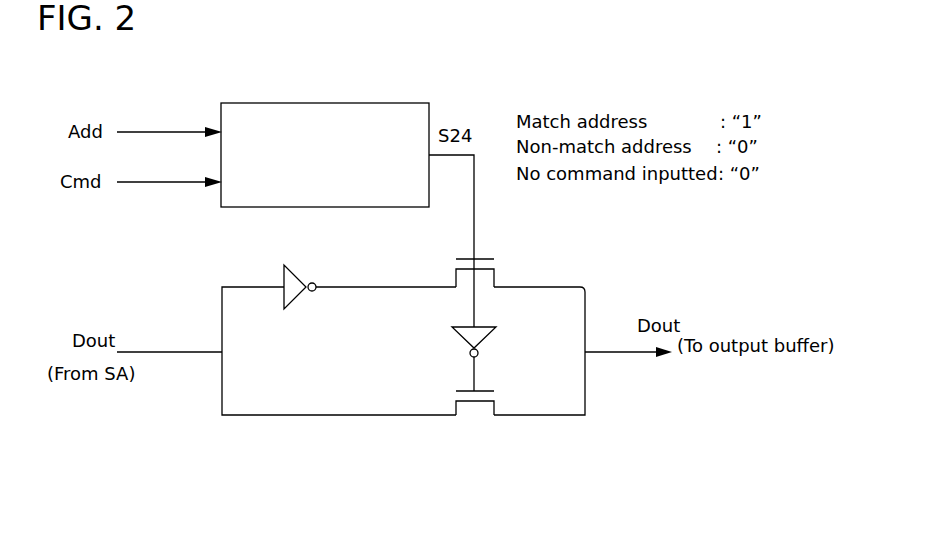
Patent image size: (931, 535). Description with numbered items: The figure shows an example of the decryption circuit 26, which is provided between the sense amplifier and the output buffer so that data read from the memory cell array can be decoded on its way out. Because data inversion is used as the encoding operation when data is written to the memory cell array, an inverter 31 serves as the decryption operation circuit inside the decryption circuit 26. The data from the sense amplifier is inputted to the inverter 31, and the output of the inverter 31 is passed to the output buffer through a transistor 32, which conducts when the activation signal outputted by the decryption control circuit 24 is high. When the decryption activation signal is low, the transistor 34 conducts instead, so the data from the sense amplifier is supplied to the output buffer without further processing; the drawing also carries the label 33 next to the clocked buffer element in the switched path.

The decryption control circuit 24 is at (270, 103).
The decryption circuit 26 is at (298, 420).
The inverter 31 is at (293, 266).
The transistor 32 is at (495, 261).
The clocked inverter 33 is at (492, 340).
The transistor 34 is at (475, 413).